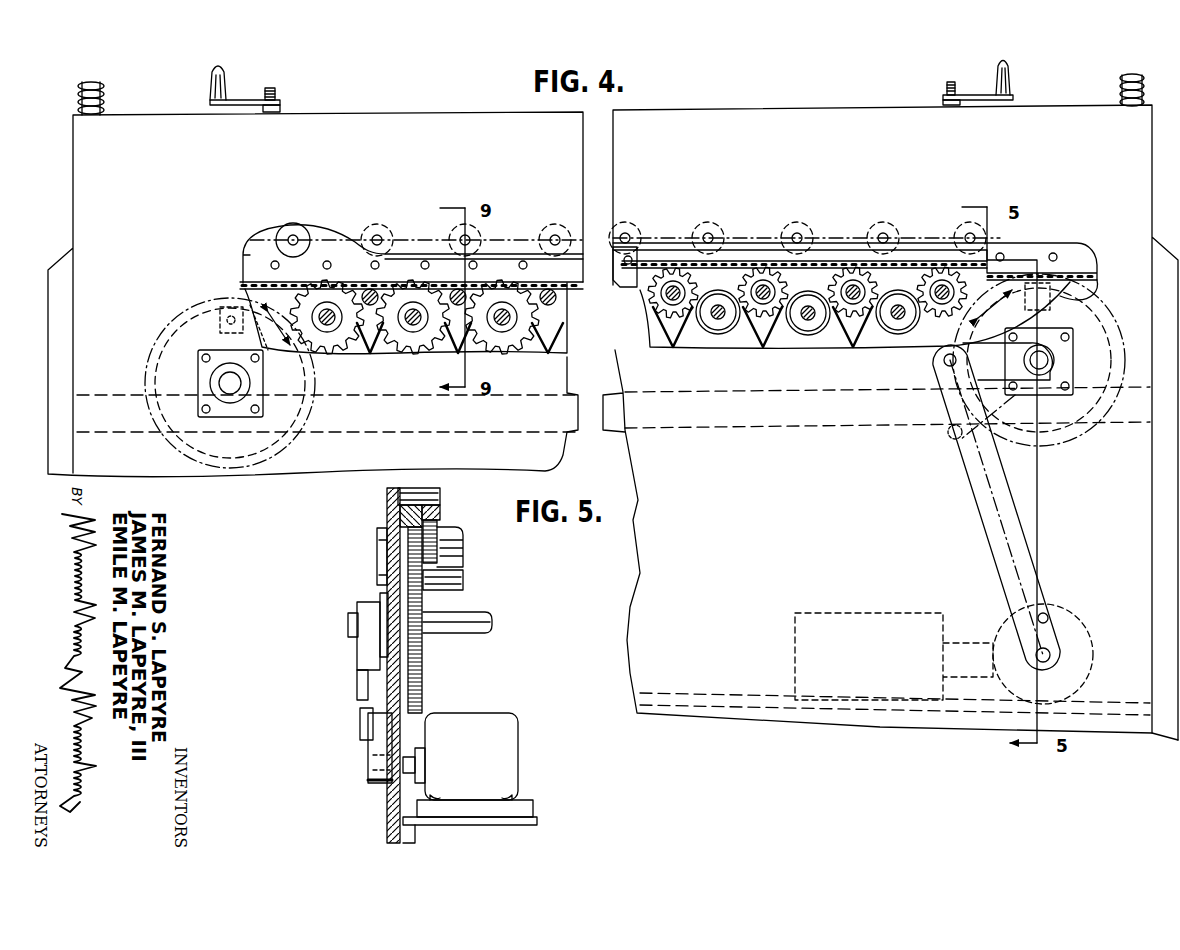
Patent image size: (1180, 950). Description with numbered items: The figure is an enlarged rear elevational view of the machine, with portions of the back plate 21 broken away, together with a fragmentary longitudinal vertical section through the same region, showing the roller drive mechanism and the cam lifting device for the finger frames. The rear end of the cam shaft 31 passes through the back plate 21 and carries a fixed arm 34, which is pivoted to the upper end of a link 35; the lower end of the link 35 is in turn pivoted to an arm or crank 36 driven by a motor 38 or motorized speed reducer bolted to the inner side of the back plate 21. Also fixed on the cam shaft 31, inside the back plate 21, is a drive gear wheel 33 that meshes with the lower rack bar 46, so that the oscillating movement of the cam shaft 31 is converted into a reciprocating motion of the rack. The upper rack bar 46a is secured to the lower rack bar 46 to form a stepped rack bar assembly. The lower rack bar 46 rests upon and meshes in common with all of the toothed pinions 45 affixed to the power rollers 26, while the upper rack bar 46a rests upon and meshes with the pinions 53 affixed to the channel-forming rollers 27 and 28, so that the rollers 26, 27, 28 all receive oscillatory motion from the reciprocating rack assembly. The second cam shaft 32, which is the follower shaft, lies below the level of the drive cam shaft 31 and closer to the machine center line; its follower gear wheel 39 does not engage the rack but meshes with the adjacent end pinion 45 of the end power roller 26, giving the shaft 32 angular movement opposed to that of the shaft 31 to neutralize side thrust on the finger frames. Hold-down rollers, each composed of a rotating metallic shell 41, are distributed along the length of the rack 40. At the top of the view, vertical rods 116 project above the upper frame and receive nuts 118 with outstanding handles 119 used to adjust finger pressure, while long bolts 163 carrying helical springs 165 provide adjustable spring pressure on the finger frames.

In FIG. 4, the back plate 21 is at (700, 718).
In FIG. 5, the back plate 21 is at (386, 500).
In FIG. 4, the power roller 26 is at (800, 323).
In FIG. 5, the power roller 26 is at (460, 581).
In FIG. 4, the channel-forming roller 27 is at (653, 273).
In FIG. 4, the channel-forming roller 28 is at (742, 275).
In FIG. 5, the channel-forming roller 28 is at (462, 556).
In FIG. 4, the cam shaft 31 is at (1047, 366).
In FIG. 5, the cam shaft 31 is at (488, 634).
In FIG. 4, the cam shaft 32 is at (232, 395).
In FIG. 4, the drive gear wheel 33 is at (1087, 296).
In FIG. 5, the drive gear wheel 33 is at (425, 686).
In FIG. 4, the arm 34 is at (1000, 370).
In FIG. 5, the arm 34 is at (375, 603).
In FIG. 4, the link 35 is at (962, 403).
In FIG. 5, the link 35 is at (358, 688).
In FIG. 4, the arm or crank 36 is at (1052, 632).
In FIG. 5, the arm or crank 36 is at (368, 752).
In FIG. 4, the motor 38 is at (1095, 652).
In FIG. 5, the motor 38 is at (505, 738).
In FIG. 4, the follower gear wheel 39 is at (268, 350).
In FIG. 4, the rack 40 is at (328, 262).
In FIG. 4, the metallic shell 41 is at (292, 232).
In FIG. 5, the metallic shell 41 is at (420, 497).
In FIG. 4, the pinion 45 is at (322, 340).
In FIG. 4, the lower rack bar 46 is at (568, 290).
In FIG. 5, the lower rack bar 46 is at (408, 518).
In FIG. 4, the upper rack bar 46a is at (905, 268).
In FIG. 5, the upper rack bar 46a is at (440, 513).
In FIG. 4, the pinion 53 is at (780, 287).
In FIG. 5, the pinion 53 is at (437, 545).
In FIG. 4, the vertical rod 116 is at (272, 88).
In FIG. 4, the nut 118 is at (282, 106).
In FIG. 4, the handle 119 is at (212, 80).
In FIG. 4, the long bolt 163 is at (80, 82).
In FIG. 4, the helical spring 165 is at (105, 92).